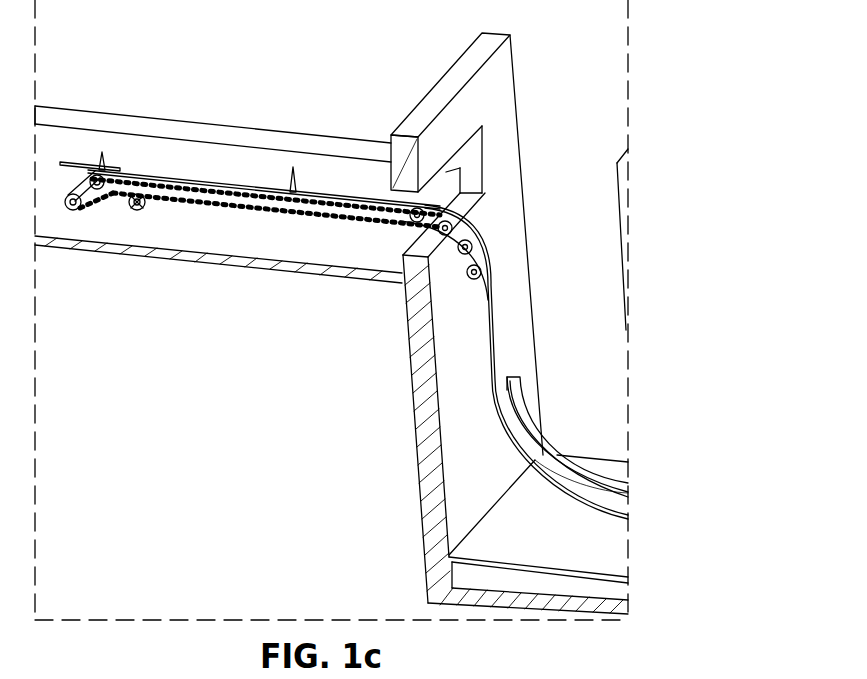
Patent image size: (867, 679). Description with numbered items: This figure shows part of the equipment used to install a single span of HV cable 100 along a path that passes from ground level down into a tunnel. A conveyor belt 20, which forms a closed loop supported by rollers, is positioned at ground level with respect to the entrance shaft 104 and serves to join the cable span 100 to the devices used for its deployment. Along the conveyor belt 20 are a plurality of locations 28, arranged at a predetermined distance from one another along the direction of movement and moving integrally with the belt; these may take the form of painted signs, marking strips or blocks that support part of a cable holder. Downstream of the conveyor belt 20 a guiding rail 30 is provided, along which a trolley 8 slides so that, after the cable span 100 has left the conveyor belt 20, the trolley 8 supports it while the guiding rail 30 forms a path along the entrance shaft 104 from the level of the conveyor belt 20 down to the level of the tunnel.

The trolley 8 is at (513, 417).
The conveyor belt 20 is at (266, 222).
The locations 28 is at (202, 182).
The guiding rail 30 is at (557, 467).
The HV cable 100 is at (493, 325).
The entrance shaft 104 is at (563, 343).